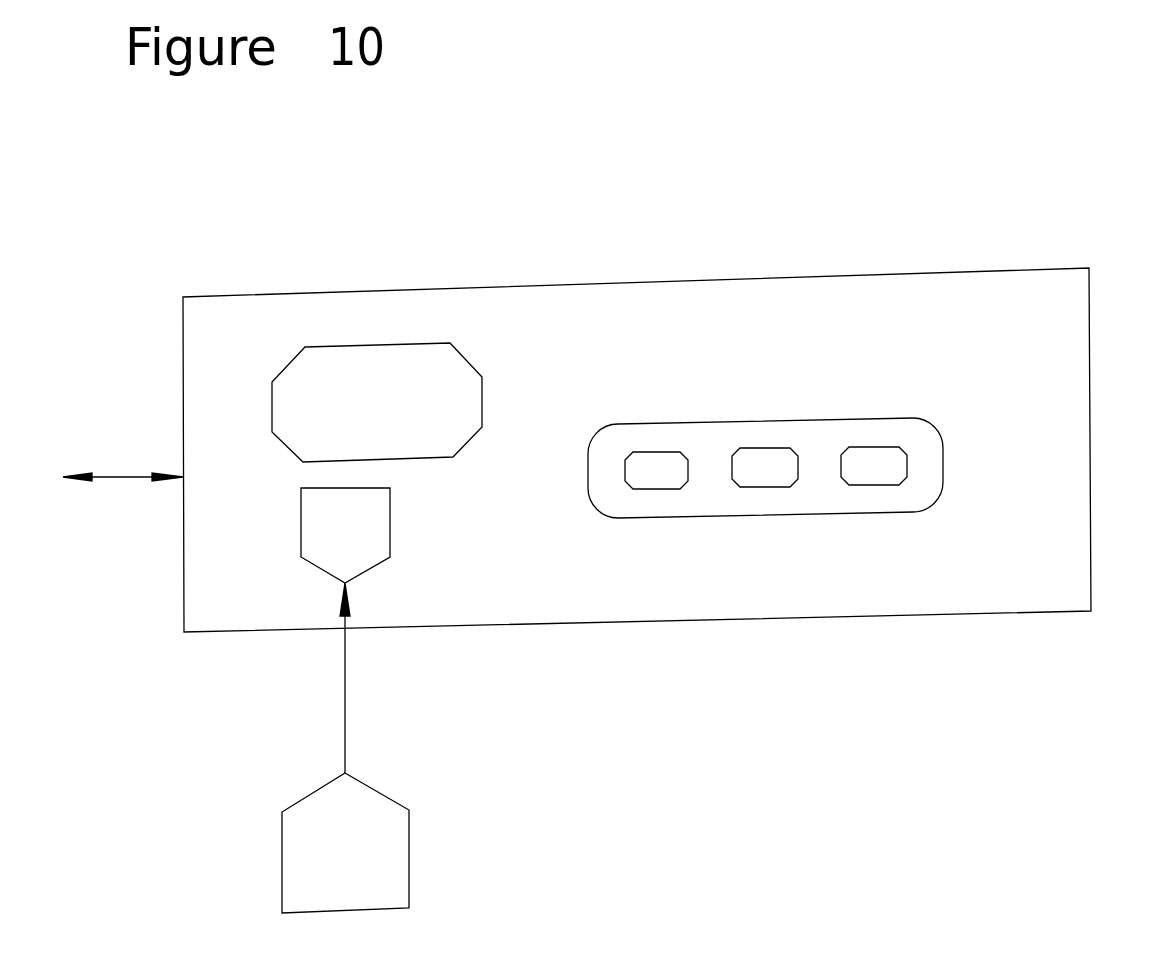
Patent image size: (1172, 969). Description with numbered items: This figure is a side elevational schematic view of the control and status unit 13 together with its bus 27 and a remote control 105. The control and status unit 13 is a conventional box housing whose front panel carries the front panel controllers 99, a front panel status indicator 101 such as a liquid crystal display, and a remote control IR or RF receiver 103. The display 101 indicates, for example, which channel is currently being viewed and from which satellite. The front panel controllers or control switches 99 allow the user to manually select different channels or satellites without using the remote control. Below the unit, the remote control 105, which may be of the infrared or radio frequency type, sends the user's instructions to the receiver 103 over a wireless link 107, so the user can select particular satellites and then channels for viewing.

The control and status unit 13 is at (1017, 557).
The bus 27 is at (138, 470).
The front panel controllers 99 is at (923, 446).
The front panel status indicator 101 is at (455, 362).
The remote control IR or RF receiver 103 is at (363, 527).
The remote control 105 is at (390, 840).
The wireless link 107 is at (345, 688).